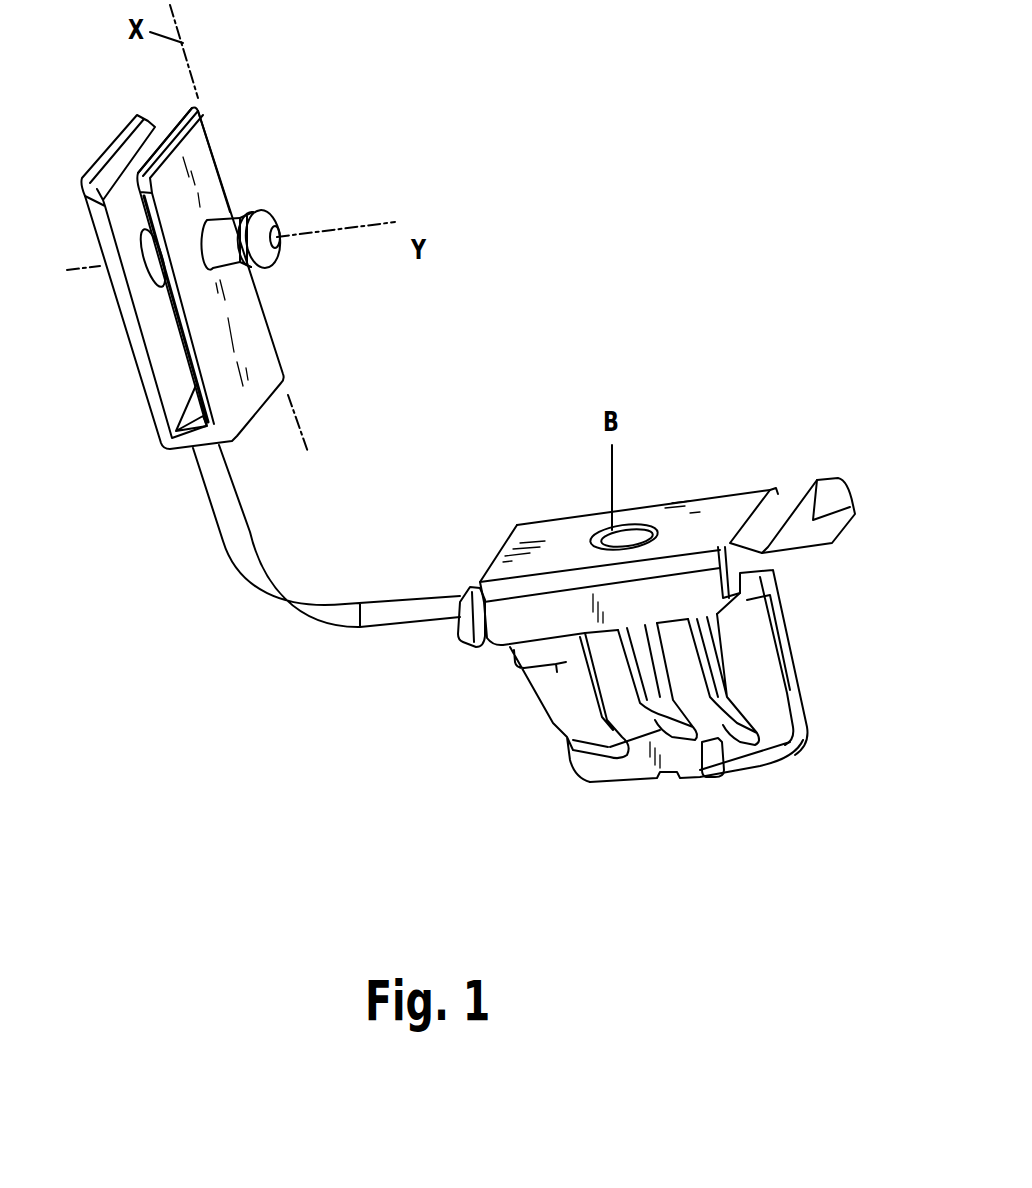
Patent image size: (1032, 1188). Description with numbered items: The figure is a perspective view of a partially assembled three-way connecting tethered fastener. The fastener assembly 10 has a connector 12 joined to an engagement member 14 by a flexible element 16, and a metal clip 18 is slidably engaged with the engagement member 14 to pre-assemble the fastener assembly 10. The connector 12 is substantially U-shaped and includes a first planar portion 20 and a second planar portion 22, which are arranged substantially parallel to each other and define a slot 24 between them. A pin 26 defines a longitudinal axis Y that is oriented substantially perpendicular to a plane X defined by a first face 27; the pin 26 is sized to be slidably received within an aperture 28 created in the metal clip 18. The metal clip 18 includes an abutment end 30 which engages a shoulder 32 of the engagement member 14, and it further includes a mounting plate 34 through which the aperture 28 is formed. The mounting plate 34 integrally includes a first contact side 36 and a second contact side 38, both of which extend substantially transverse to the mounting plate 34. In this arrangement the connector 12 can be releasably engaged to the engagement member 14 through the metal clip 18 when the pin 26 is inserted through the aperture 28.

The fastener assembly 10 is at (595, 372).
The connector 12 is at (250, 333).
The engagement member 14 is at (828, 490).
The flexible element 16 is at (252, 545).
The metal clip 18 is at (545, 535).
The first planar portion 20 is at (197, 128).
The second planar portion 22 is at (92, 227).
The slot 24 is at (163, 130).
The pin 26 is at (265, 222).
The first face 27 is at (250, 302).
The aperture 28 is at (635, 537).
The abutment end 30 is at (507, 548).
The shoulder 32 is at (462, 634).
The mounting plate 34 is at (733, 512).
The first contact side 36 is at (775, 617).
The second contact side 38 is at (770, 750).